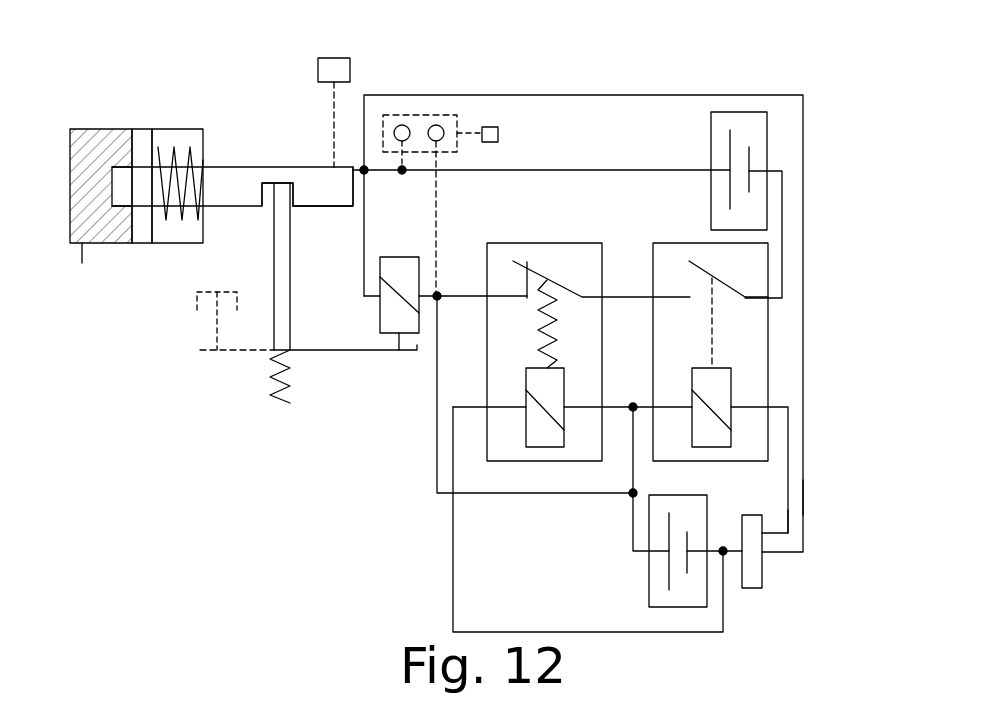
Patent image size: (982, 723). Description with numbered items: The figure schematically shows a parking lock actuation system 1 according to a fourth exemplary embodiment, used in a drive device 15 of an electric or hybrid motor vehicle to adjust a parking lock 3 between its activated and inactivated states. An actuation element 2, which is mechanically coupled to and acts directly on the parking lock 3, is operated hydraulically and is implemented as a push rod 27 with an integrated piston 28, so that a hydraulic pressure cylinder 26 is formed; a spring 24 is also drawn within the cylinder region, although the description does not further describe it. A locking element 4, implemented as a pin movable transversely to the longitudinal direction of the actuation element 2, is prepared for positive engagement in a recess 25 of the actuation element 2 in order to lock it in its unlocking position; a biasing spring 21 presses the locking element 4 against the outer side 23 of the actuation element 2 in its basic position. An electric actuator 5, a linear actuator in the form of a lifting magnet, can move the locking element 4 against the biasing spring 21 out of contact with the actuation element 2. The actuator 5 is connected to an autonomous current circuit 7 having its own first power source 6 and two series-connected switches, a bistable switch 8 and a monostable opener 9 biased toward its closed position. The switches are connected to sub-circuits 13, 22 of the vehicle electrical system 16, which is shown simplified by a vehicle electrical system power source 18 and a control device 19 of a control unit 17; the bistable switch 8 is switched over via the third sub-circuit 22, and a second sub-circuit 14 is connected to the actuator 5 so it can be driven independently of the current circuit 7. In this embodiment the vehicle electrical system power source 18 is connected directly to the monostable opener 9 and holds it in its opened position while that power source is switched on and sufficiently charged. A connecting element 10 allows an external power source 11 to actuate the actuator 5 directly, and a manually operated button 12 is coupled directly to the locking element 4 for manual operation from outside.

The parking lock actuation system 1 is at (613, 282).
The actuation element 2 is at (232, 144).
The push rod 27 is at (235, 168).
The parking lock 3 is at (337, 58).
The locking element 4 is at (282, 284).
The actuator 5 is at (400, 273).
The first power source 6 is at (767, 130).
The current circuit 7 is at (655, 170).
The bistable switch 8 is at (757, 329).
The monostable opener 9 is at (565, 252).
The connecting element 10 is at (420, 128).
The external power source 11 is at (498, 137).
The button 12 is at (208, 292).
The sub-circuit 13 is at (453, 562).
The second sub-circuit 14 is at (805, 255).
The drive device 15 is at (807, 88).
The vehicle electrical system 16 is at (806, 496).
The control unit 17 is at (792, 527).
The vehicle electrical system power source 18 is at (707, 598).
The control device 19 is at (752, 562).
The biasing spring 21 is at (280, 402).
The third sub-circuit 22 is at (790, 448).
The outer side 23 is at (322, 208).
The spring 24 is at (190, 150).
The recess 25 is at (270, 186).
The hydraulic pressure cylinder 26 is at (100, 130).
The piston 28 is at (143, 243).